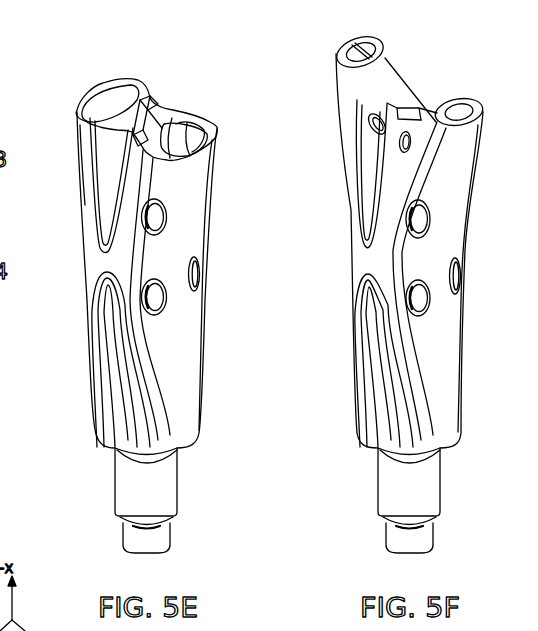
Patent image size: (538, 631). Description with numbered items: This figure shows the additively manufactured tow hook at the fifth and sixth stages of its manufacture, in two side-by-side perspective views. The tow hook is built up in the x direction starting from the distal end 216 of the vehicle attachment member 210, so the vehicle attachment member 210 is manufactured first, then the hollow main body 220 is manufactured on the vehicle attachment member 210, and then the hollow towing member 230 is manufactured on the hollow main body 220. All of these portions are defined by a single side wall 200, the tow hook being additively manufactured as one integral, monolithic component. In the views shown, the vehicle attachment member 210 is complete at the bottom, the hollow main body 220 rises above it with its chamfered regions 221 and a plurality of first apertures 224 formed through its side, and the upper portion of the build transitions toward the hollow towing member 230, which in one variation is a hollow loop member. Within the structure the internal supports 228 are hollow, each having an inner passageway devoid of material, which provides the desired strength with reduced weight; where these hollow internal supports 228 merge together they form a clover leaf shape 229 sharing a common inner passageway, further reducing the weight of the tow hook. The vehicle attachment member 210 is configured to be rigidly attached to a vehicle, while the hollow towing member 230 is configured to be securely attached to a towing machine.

In FIG. 5E, the side wall 200 is at (105, 86).
In FIG. 5F, the side wall 200 is at (378, 40).
In FIG. 5E, the vehicle attachment member 210 is at (113, 498).
In FIG. 5F, the vehicle attachment member 210 is at (375, 498).
In FIG. 5E, the distal end 216 is at (141, 553).
In FIG. 5F, the distal end 216 is at (408, 553).
In FIG. 5F, the hollow main body 220 is at (346, 301).
In FIG. 5E, the chamfered regions 221 is at (108, 202).
In FIG. 5F, the chamfered regions 221 is at (378, 398).
In FIG. 5E, the first apertures 224 is at (157, 215).
In FIG. 5F, the first apertures 224 is at (422, 217).
In FIG. 5E, the internal supports 228 is at (185, 135).
In FIG. 5F, the internal supports 228 is at (368, 126).
In FIG. 5F, the clover leaf shape 229 is at (408, 108).
In FIG. 5F, the hollow towing member 230 is at (329, 78).